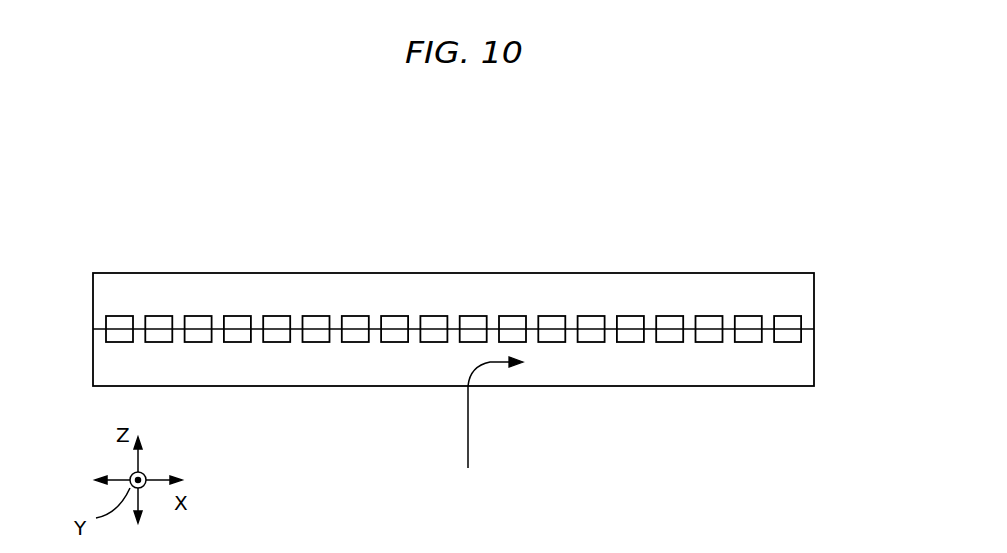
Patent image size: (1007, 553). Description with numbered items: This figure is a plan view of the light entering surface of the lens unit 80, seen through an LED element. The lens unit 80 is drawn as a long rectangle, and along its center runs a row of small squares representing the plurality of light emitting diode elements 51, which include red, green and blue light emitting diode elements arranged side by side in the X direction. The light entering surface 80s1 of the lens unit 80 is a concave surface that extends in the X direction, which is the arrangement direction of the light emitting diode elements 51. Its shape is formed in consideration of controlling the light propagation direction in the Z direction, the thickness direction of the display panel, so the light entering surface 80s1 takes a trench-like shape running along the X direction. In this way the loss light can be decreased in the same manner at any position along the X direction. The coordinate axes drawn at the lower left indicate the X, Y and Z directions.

The lens unit 80 is at (302, 222).
The light emitting diode elements 51 is at (747, 343).
The light entering surface 80s1 is at (480, 429).